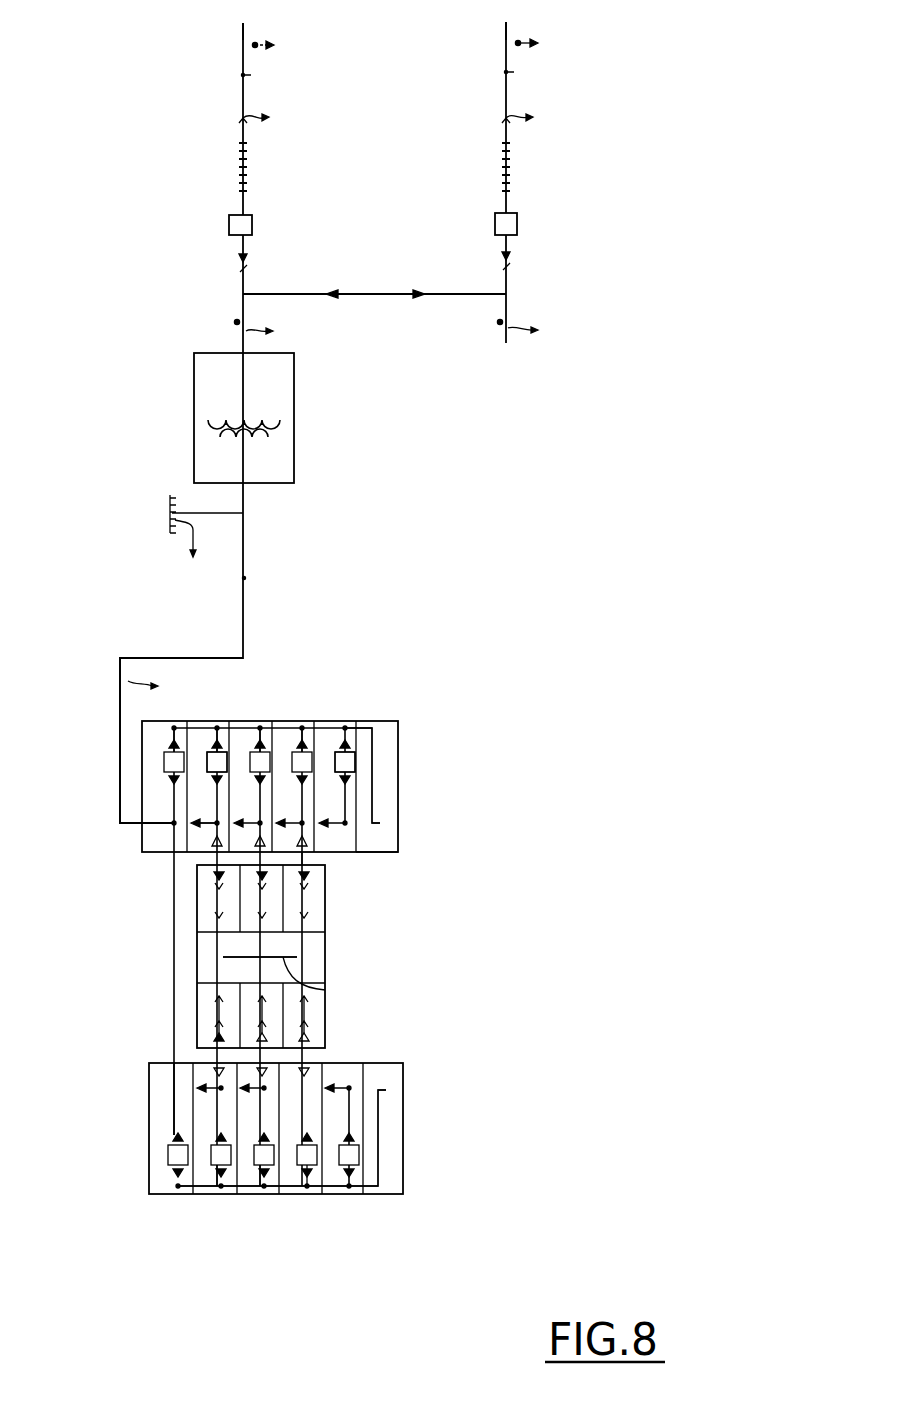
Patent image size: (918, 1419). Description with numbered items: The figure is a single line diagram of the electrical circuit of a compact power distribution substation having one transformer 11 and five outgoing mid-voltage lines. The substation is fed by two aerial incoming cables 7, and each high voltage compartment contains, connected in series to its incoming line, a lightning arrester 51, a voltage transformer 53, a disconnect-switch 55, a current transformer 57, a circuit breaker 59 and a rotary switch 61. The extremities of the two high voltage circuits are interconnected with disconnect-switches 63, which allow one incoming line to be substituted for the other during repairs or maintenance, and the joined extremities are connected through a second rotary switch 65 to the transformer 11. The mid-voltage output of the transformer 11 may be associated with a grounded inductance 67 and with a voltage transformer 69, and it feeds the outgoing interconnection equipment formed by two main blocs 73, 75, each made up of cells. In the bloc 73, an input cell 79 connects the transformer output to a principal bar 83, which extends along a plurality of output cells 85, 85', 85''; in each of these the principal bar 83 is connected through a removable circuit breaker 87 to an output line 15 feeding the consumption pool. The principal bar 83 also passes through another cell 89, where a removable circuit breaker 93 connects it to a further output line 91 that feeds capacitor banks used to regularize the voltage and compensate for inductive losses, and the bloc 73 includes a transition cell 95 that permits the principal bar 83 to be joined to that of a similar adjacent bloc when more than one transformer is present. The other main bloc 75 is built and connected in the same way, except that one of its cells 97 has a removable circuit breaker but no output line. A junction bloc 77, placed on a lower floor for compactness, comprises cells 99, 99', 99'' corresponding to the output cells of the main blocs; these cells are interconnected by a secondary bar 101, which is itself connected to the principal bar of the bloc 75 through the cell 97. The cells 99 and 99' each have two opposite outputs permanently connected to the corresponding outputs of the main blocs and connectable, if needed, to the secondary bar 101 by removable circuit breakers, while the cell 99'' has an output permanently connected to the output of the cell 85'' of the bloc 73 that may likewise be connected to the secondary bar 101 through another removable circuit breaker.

The aerial incoming cable 7 is at (243, 31).
The lightning arrester 51 is at (255, 44).
The voltage transformer 53 is at (252, 74).
The disconnect-switch 55 is at (243, 118).
The current transformer 57 is at (244, 166).
The circuit breaker 59 is at (252, 227).
The rotary switch 61 is at (237, 263).
The disconnect-switches 63 is at (430, 288).
The second rotary switch 65 is at (236, 324).
The transformer 11 is at (294, 437).
The grounded inductance 67 is at (170, 513).
The voltage transformer 69 is at (247, 578).
The input cell 79 is at (154, 738).
The principal bar 83 is at (177, 724).
The output cell 85 is at (275, 983).
The output cell 85' is at (341, 980).
The output cell 85'' is at (411, 706).
The cell 89 is at (358, 728).
The removable circuit breaker 93 is at (355, 762).
The removable circuit breaker 87 is at (208, 755).
The output line 15 is at (196, 824).
The transition cell 95 is at (380, 853).
The output line 91 is at (330, 855).
The main bloc 73 is at (399, 805).
The junction bloc 77 is at (330, 967).
The secondary bar 101 is at (327, 984).
The cell 99 is at (144, 1011).
The cell 99' is at (154, 1042).
The cell 99'' is at (385, 1021).
The main bloc 75 is at (388, 1056).
The cell 97 is at (310, 1197).